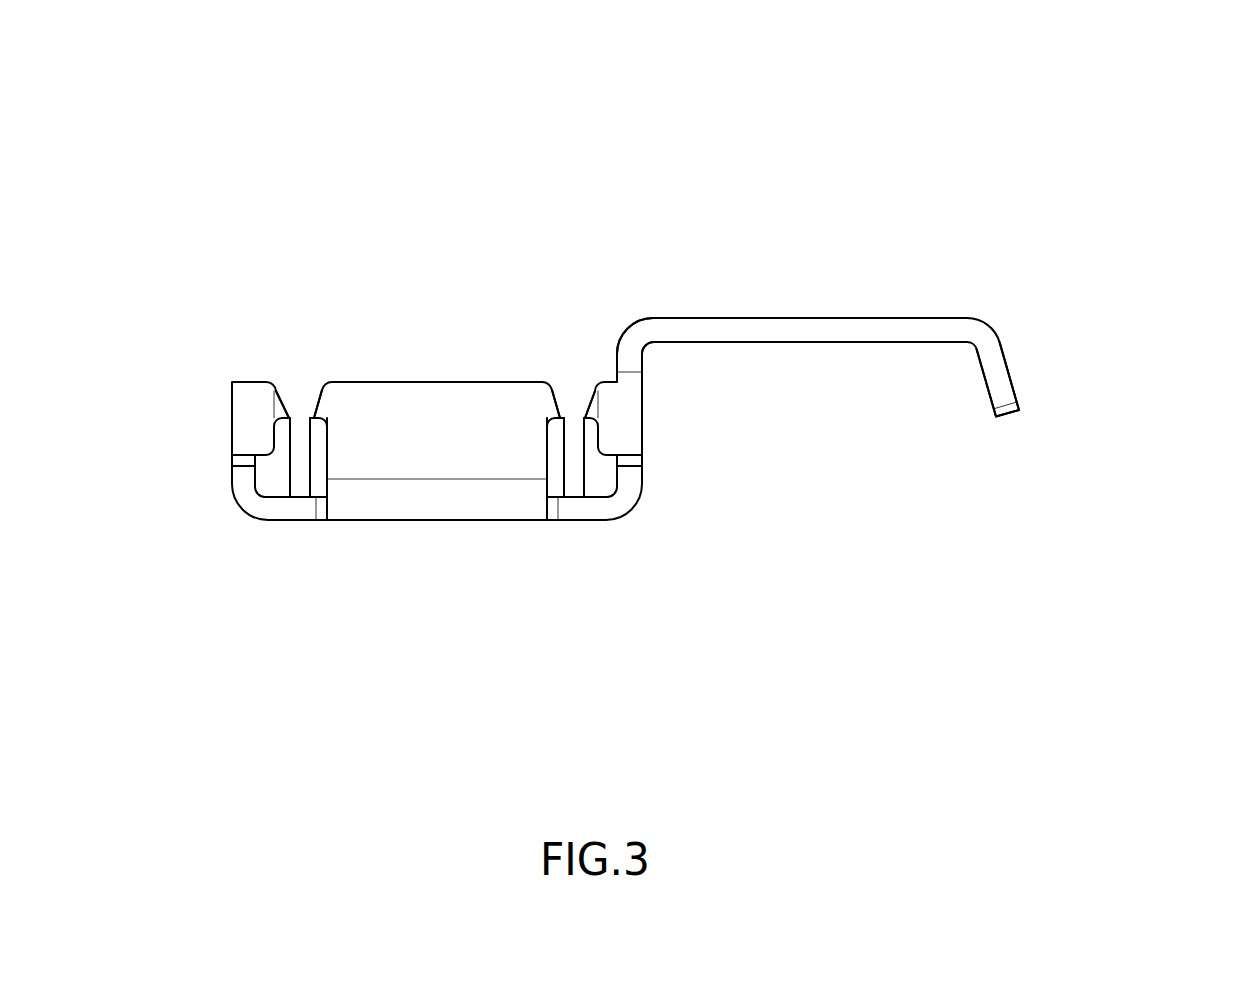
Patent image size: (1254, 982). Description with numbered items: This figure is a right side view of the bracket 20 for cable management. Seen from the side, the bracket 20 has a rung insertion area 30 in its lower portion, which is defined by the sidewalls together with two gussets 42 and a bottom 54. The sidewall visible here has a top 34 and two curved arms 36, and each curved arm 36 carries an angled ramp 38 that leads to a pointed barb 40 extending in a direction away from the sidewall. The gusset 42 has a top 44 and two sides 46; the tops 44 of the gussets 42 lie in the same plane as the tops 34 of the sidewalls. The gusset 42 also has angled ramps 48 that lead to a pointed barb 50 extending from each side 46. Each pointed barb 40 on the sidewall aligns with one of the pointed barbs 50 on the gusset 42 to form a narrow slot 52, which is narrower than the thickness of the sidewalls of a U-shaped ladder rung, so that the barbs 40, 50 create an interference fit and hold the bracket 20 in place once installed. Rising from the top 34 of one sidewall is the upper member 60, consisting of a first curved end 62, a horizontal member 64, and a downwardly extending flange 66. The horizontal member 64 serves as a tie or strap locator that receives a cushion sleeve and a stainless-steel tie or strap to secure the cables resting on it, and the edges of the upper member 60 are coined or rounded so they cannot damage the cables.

The bracket 20 is at (1092, 112).
The rung insertion area 30 is at (214, 304).
The top 34 is at (248, 382).
The curved arm 36 is at (253, 425).
The angled ramp 38 is at (294, 417).
The pointed barb 40 is at (283, 418).
The gusset 42 is at (465, 443).
The top 44 is at (438, 382).
The side 46 is at (327, 459).
The angled ramp 48 is at (313, 417).
The pointed barb 50 is at (295, 470).
The narrow slot 52 is at (300, 417).
The bottom 54 is at (287, 495).
The upper member 60 is at (846, 266).
The first curved end 62 is at (637, 338).
The horizontal member 64 is at (850, 343).
The downwardly extending flange 66 is at (1003, 387).